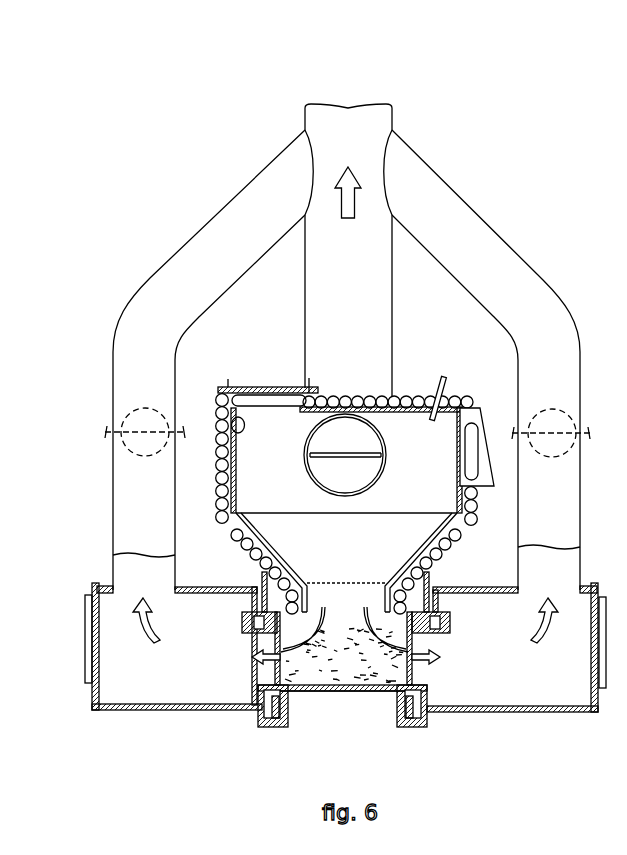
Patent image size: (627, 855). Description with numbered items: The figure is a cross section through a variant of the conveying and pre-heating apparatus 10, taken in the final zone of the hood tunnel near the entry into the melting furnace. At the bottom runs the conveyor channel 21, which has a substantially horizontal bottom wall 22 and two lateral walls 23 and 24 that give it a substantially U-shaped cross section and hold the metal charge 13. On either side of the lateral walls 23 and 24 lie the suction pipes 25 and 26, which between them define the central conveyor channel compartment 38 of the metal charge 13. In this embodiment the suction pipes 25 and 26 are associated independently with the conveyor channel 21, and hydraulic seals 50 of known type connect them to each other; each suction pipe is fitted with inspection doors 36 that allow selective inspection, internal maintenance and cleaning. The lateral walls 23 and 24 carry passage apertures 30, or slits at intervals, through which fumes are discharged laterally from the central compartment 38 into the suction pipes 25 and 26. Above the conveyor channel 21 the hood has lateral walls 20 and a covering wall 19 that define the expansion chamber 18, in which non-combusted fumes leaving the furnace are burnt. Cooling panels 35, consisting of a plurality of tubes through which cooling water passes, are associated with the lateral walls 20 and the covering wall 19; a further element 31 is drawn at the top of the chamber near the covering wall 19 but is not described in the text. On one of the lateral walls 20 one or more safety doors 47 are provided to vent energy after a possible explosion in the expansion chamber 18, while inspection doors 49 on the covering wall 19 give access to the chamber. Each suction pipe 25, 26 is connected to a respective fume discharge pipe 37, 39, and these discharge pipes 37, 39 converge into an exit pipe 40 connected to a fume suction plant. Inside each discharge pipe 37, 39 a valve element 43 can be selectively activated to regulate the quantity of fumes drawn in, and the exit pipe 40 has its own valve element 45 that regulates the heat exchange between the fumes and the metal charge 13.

The conveying and pre-heating apparatus 10 is at (556, 256).
The metal charge 13 is at (337, 640).
The expansion chamber 18 is at (232, 428).
The covering wall 19 is at (336, 399).
The lateral walls 20 is at (240, 470).
The conveyor channel 21 is at (378, 694).
The bottom wall 22 is at (327, 691).
The lateral wall 23 is at (273, 634).
The lateral wall 24 is at (418, 640).
The suction pipe 25 is at (152, 703).
The suction pipe 26 is at (590, 712).
The passage apertures 30 is at (272, 672).
The rod 31 is at (438, 385).
The cooling panels 35 is at (467, 397).
The inspection doors 36 is at (87, 662).
The fume discharge pipe 37 is at (220, 236).
The central conveyor channel compartment 38 is at (385, 617).
The fume discharge pipe 39 is at (478, 238).
The exit pipe 40 is at (392, 297).
The valve element 43 is at (146, 412).
The valve element 45 is at (378, 458).
The safety doors 47 is at (485, 445).
The inspection doors 49 is at (268, 390).
The hydraulic seals 50 is at (238, 624).